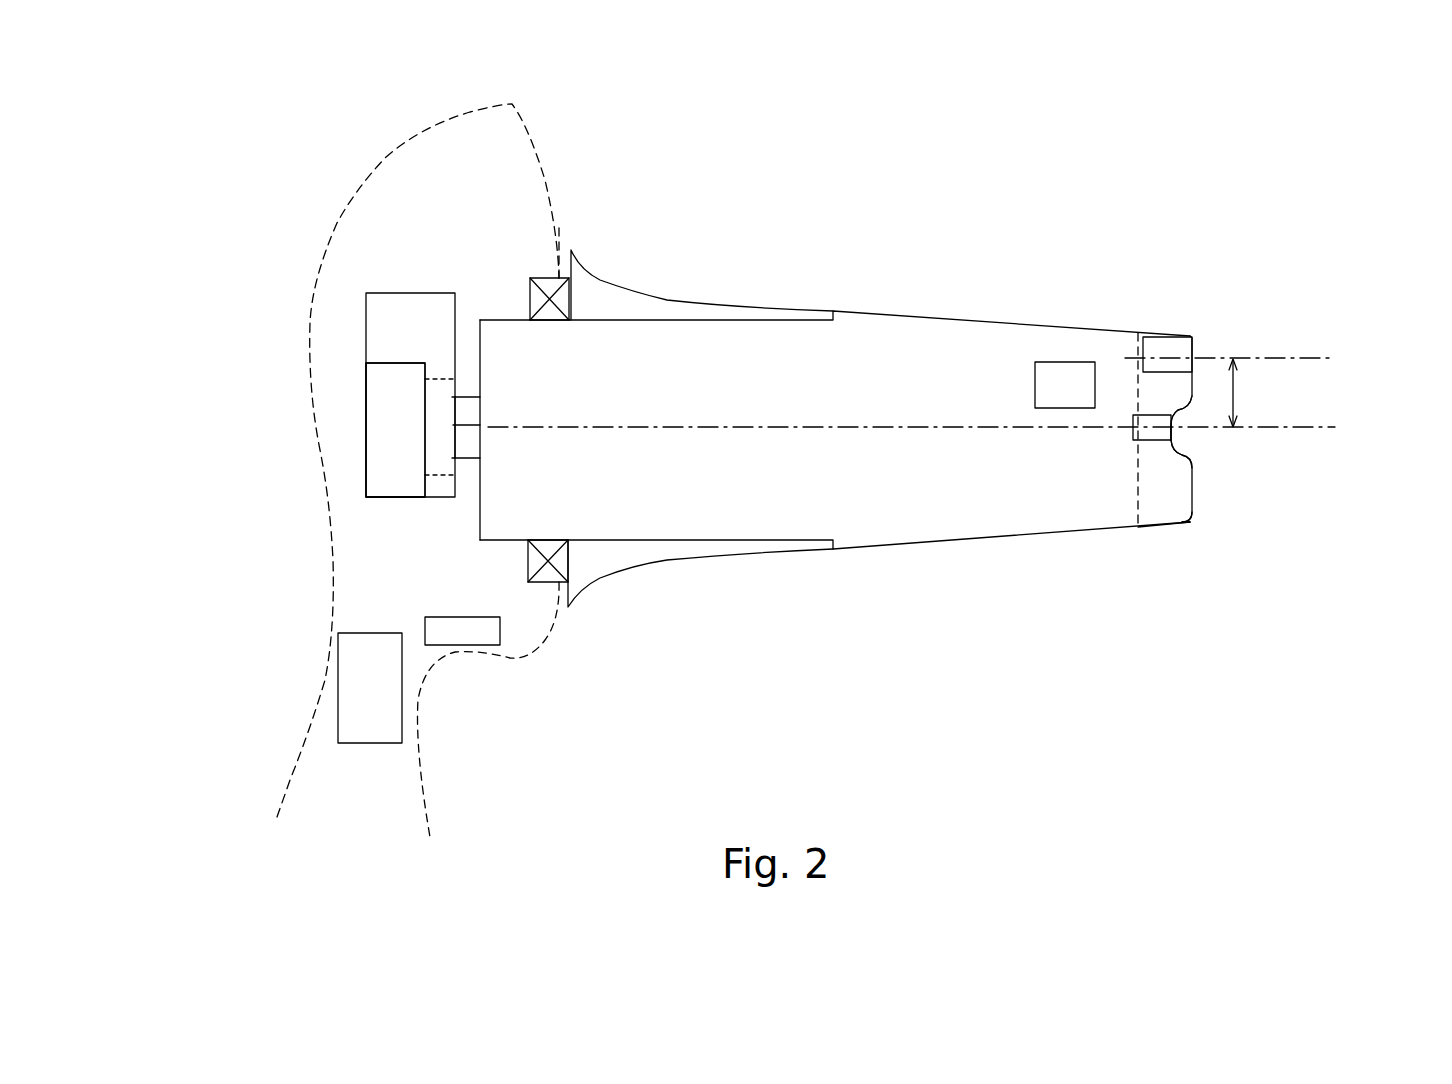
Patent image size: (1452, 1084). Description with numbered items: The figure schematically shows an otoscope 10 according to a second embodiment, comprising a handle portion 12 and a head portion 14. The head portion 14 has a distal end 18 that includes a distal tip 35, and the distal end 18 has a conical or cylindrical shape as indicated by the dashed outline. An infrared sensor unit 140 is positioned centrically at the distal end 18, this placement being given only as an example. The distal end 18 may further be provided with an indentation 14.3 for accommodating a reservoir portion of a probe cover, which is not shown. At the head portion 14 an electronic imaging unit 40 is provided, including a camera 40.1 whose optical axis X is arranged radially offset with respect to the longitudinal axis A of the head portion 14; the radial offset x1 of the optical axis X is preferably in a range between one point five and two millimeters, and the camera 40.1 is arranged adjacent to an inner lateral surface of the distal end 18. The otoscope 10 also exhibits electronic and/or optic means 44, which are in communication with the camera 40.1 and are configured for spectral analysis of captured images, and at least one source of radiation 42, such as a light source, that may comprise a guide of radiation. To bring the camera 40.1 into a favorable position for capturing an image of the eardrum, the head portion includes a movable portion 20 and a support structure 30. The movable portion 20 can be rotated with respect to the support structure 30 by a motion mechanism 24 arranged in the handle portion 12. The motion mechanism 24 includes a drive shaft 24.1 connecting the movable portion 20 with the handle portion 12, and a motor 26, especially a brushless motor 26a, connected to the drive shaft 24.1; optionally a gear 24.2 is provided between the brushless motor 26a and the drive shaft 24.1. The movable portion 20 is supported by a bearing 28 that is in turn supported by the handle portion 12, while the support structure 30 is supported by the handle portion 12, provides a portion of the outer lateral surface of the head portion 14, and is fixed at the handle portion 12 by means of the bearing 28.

The otoscope 10 is at (262, 197).
The handle portion 12 is at (302, 720).
The head portion 14 is at (931, 210).
The indentation 14.3 is at (1200, 443).
The distal end 18 is at (1178, 533).
The movable portion 20 is at (1003, 378).
The motion mechanism 24 is at (438, 262).
The drive shaft 24.1 is at (463, 393).
The gear 24.2 is at (440, 465).
The motor 26 is at (392, 487).
The brushless motor 26a is at (400, 474).
The bearing 28 is at (543, 277).
The support structure 30 is at (652, 310).
The distal tip 35 is at (1197, 511).
The electronic imaging unit 40 is at (1187, 300).
The camera 40.1 is at (1160, 332).
The source of radiation 42 is at (468, 633).
The electronic and/or optic means 44 is at (347, 647).
The infrared sensor unit 140 is at (1123, 440).
The radial offset x1 is at (1238, 388).
The optical axis X is at (1317, 357).
The longitudinal axis A is at (1320, 426).